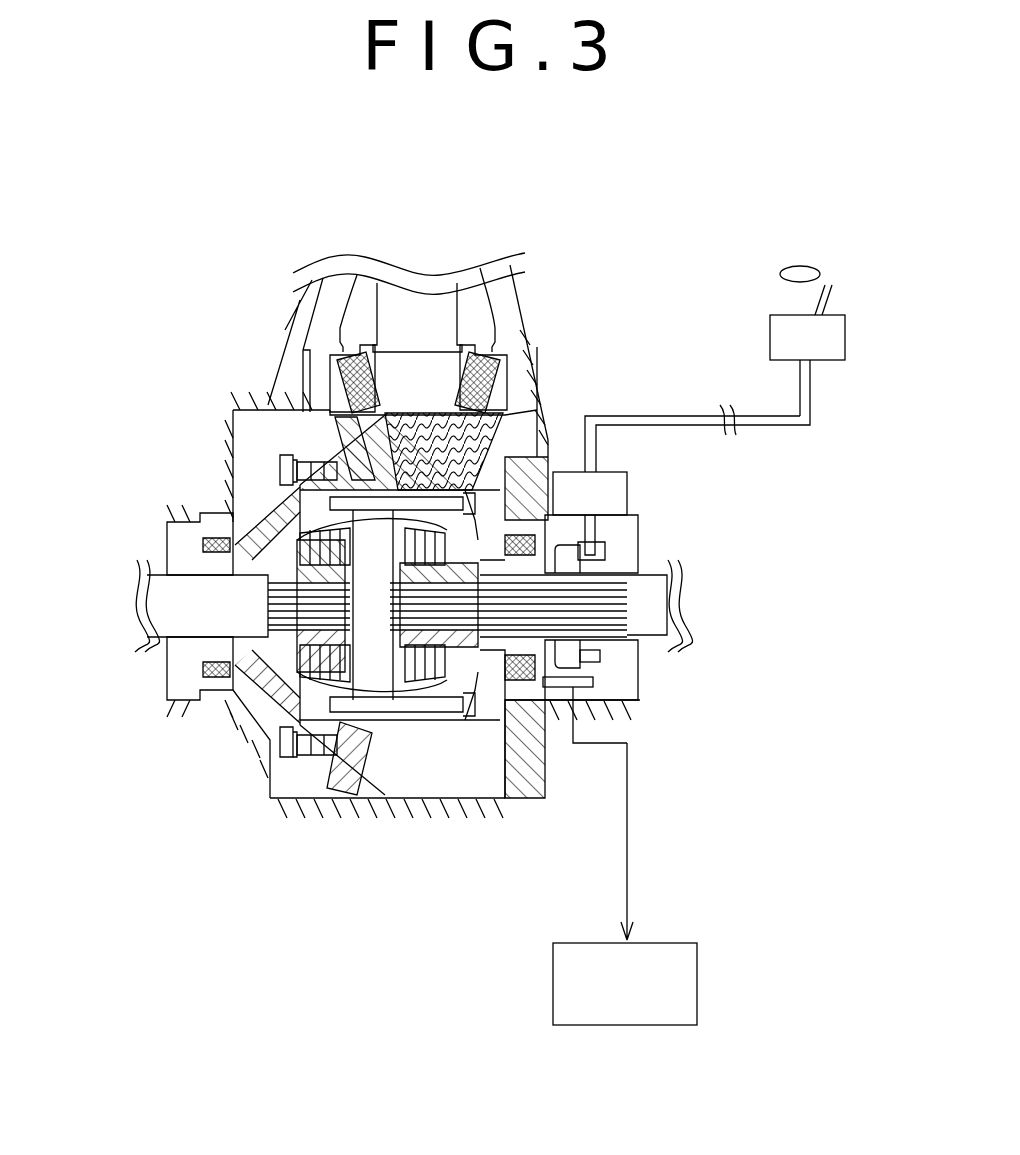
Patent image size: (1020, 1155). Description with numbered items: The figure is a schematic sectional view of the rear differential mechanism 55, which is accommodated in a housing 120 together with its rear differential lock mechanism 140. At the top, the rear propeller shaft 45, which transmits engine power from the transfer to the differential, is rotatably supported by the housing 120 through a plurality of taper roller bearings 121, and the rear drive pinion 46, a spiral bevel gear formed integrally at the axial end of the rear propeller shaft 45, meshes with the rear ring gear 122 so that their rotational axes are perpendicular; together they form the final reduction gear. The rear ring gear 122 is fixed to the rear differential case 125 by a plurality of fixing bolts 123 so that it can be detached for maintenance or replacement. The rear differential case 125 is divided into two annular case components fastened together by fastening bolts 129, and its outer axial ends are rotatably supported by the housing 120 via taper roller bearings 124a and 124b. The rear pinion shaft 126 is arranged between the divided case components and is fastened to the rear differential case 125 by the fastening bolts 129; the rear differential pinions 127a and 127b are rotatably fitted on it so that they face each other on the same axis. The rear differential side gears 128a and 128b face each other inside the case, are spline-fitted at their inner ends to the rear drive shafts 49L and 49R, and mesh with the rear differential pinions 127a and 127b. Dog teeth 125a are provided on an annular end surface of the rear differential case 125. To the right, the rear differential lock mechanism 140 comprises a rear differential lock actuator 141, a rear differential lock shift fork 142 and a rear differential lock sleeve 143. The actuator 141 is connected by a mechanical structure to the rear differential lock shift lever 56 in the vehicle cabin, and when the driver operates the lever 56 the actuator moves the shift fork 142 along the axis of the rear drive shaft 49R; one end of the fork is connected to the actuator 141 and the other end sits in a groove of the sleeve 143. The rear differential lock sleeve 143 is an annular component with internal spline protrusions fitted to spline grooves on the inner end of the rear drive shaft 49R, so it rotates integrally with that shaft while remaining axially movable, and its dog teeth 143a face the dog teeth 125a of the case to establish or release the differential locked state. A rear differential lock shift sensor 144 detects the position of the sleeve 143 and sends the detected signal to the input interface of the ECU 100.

The rear propeller shaft 45 is at (422, 318).
The rear drive pinion 46 is at (477, 433).
The rear drive shaft 49L is at (165, 640).
The rear drive shaft 49R is at (640, 630).
The rear differential mechanism 55 is at (638, 246).
The rear differential lock shift lever 56 is at (805, 268).
The ECU 100 is at (680, 943).
The housing 120 is at (305, 385).
The taper roller bearings 121 is at (500, 370).
The rear ring gear 122 is at (340, 440).
The fixing bolts 123 is at (300, 465).
The taper roller bearing 124a is at (205, 545).
The taper roller bearing 124b is at (500, 720).
The rear differential case 125 is at (228, 508).
The dog teeth 125a is at (525, 690).
The rear pinion shaft 126 is at (365, 785).
The rear differential pinion 127a is at (330, 508).
The rear differential pinion 127b is at (385, 722).
The rear differential side gear 128a is at (268, 720).
The rear differential side gear 128b is at (470, 740).
The fastening bolts 129 is at (410, 750).
The rear differential lock mechanism 140 is at (696, 368).
The rear differential lock actuator 141 is at (627, 485).
The rear differential lock shift fork 142 is at (600, 545).
The rear differential lock sleeve 143 is at (632, 572).
The dog teeth 143a is at (592, 662).
The rear differential lock shift sensor 144 is at (598, 685).